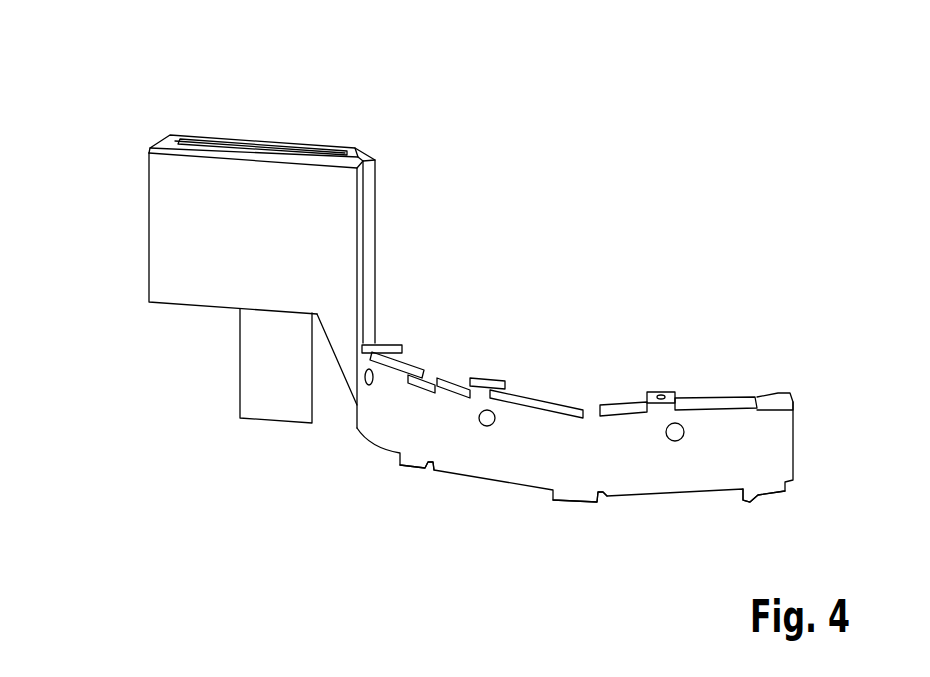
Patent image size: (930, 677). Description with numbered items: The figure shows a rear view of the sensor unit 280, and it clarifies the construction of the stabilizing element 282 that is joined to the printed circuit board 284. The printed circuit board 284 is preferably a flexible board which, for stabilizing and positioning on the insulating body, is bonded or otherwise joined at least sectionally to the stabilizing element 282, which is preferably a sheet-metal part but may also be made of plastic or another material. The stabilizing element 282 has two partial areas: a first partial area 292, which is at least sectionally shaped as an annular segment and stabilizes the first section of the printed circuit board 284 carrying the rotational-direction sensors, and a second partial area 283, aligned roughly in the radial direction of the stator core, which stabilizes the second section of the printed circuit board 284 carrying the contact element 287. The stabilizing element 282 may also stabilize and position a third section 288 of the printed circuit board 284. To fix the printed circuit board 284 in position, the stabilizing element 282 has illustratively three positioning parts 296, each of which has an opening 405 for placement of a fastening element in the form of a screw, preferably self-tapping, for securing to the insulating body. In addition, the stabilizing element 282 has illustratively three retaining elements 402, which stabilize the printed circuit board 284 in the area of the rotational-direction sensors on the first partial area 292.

The sensor unit 280 is at (508, 208).
The stabilizing element 282 is at (170, 173).
The second partial area 283 is at (193, 238).
The printed circuit board 284 is at (262, 332).
The contact element 287 is at (220, 143).
The third section 288 is at (272, 368).
The first partial area 292 is at (523, 458).
The positioning part 296 is at (397, 343).
The retaining element 402 is at (412, 469).
The opening 405 is at (382, 347).